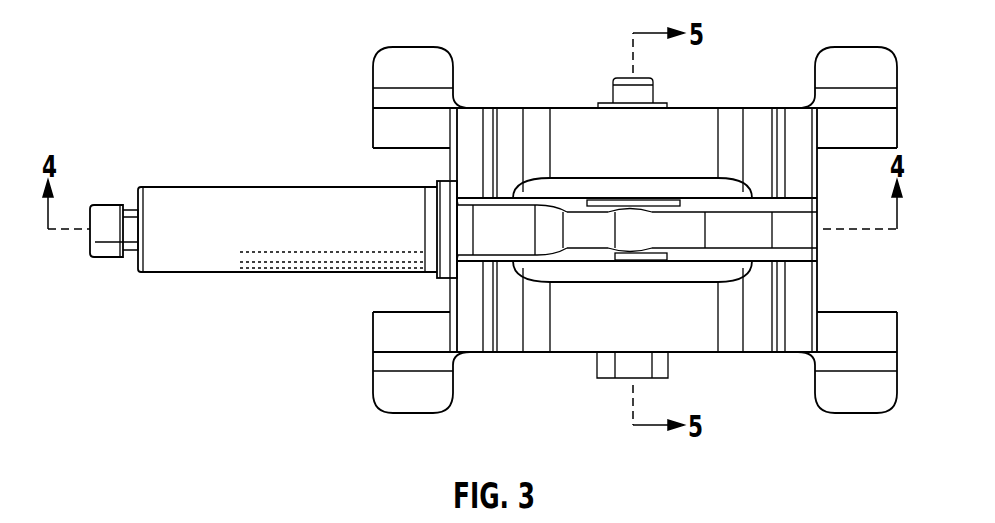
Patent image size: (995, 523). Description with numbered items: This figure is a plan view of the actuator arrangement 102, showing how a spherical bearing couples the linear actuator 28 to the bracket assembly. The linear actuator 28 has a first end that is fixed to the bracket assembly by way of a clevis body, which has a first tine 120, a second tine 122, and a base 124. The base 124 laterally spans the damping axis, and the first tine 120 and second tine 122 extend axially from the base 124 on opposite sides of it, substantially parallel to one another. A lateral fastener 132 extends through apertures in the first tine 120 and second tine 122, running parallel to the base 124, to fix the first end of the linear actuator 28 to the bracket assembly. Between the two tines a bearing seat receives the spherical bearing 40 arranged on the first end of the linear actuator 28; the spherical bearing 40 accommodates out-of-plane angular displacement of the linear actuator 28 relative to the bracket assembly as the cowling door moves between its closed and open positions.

The actuator arrangement 102 is at (174, 107).
The linear actuator 28 is at (205, 255).
The spherical bearing 40 is at (693, 227).
The first tine 120 is at (530, 353).
The second tine 122 is at (698, 107).
The base 124 is at (818, 225).
The lateral fastener 132 is at (625, 75).